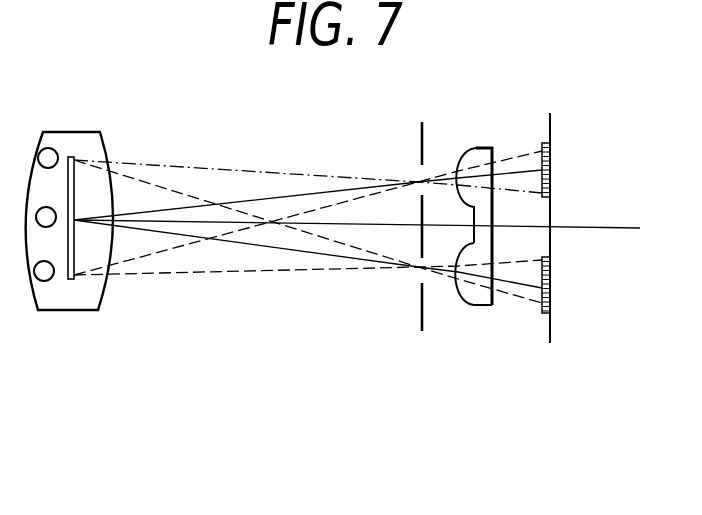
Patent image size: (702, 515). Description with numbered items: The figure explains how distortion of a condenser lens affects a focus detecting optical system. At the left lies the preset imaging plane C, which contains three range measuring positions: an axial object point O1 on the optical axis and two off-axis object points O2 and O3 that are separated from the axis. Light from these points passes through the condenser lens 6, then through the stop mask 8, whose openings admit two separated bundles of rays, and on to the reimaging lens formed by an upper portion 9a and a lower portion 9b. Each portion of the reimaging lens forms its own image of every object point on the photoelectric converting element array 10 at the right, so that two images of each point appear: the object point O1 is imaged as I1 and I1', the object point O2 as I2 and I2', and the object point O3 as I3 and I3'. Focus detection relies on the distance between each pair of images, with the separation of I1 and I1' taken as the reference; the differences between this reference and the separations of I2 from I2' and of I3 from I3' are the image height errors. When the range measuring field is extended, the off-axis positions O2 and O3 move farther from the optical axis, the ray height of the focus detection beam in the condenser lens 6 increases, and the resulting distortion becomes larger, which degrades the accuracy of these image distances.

The preset imaging plane C is at (69, 156).
The condenser lens 6 is at (73, 310).
The stop mask 8 is at (422, 320).
The reimaging lens 9a is at (478, 147).
The reimaging lens 9b is at (479, 305).
The photoelectric converting element array 10 is at (541, 313).
The object point O1 is at (51, 219).
The object point O2 is at (52, 164).
The object point O3 is at (49, 276).
The image I1 is at (573, 175).
The image I2 is at (573, 212).
The image I3 is at (573, 135).
The image I3' is at (575, 254).
The image I1' is at (575, 287).
The image I2' is at (575, 327).